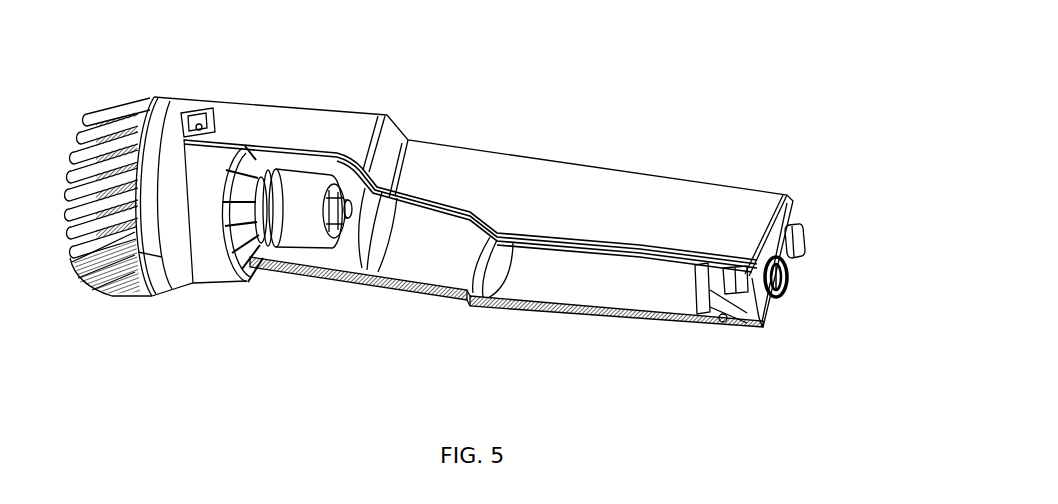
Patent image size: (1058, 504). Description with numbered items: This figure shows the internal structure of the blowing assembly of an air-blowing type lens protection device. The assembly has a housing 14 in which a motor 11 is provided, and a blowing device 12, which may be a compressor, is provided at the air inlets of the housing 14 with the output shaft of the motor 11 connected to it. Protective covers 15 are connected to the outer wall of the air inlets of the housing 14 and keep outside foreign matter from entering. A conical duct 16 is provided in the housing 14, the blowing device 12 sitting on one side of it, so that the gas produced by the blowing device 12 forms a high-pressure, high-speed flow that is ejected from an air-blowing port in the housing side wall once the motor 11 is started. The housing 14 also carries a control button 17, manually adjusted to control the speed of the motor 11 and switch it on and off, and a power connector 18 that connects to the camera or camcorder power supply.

The motor 11 is at (303, 203).
The blowing device 12 is at (218, 193).
The housing 14 is at (550, 183).
The protective covers 15 is at (102, 187).
The conical duct 16 is at (445, 247).
The control button 17 is at (802, 228).
The power connector 18 is at (789, 291).